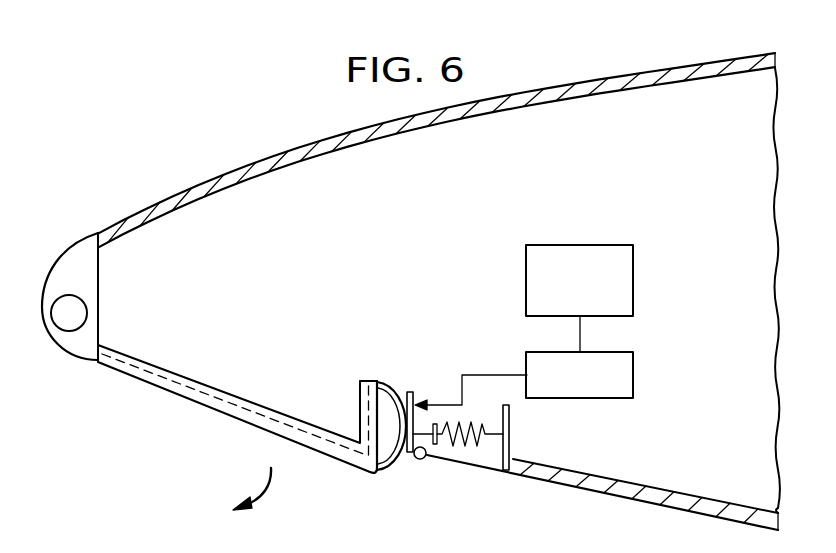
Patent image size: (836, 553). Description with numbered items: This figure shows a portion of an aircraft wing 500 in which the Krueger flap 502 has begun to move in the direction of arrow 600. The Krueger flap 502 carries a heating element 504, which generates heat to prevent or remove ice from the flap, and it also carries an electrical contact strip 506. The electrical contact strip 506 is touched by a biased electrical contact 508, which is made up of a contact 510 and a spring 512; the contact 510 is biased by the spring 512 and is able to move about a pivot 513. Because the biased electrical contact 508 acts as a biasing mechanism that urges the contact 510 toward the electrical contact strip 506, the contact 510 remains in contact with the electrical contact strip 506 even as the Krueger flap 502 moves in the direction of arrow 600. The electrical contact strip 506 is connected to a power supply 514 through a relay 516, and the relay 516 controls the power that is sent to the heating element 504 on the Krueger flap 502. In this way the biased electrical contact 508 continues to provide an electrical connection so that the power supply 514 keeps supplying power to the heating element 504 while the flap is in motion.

The wing 500 is at (663, 68).
The Krueger flap 502 is at (387, 420).
The heating element 504 is at (200, 392).
The electrical contact strip 506 is at (385, 381).
The biased electrical contact 508 is at (460, 352).
The contact 510 is at (410, 392).
The spring 512 is at (468, 447).
The pivot 513 is at (417, 461).
The power supply 514 is at (635, 280).
The relay 516 is at (635, 375).
The arrow 600 is at (268, 490).